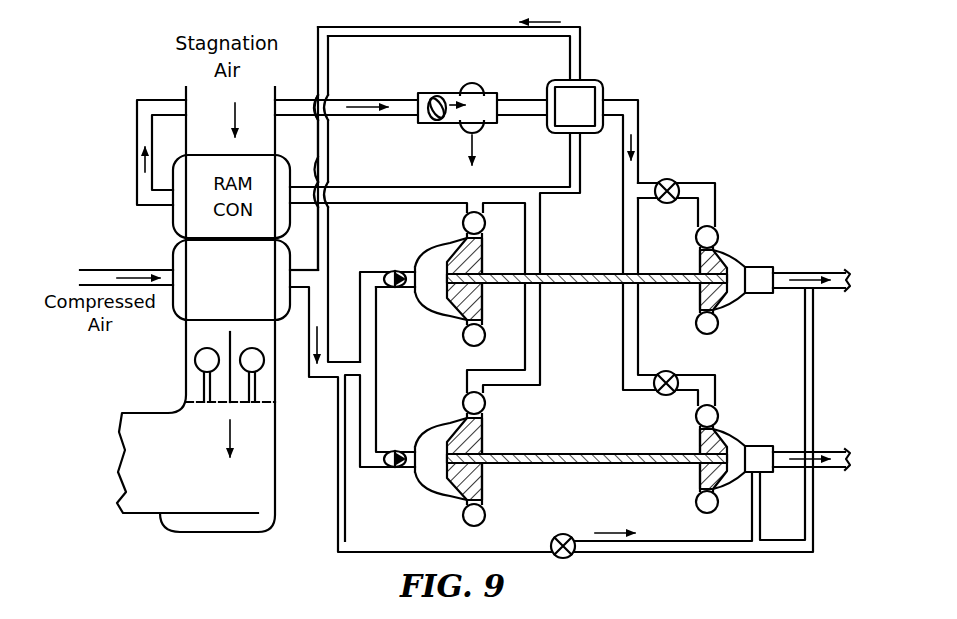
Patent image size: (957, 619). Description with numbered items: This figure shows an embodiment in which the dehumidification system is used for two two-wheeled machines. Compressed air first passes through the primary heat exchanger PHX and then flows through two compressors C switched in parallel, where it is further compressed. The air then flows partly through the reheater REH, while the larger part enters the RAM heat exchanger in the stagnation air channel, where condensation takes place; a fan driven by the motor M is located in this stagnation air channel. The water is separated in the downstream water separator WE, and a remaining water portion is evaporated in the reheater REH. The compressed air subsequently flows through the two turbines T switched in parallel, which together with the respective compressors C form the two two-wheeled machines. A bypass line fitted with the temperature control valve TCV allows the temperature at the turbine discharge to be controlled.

The primary heat exchanger PHX is at (231, 280).
The water separator WE is at (457, 115).
The reheater REH is at (575, 106).
The temperature control valve TCV is at (564, 535).
The compressor C is at (448, 369).
The turbine T is at (757, 369).
The motor M is at (229, 375).